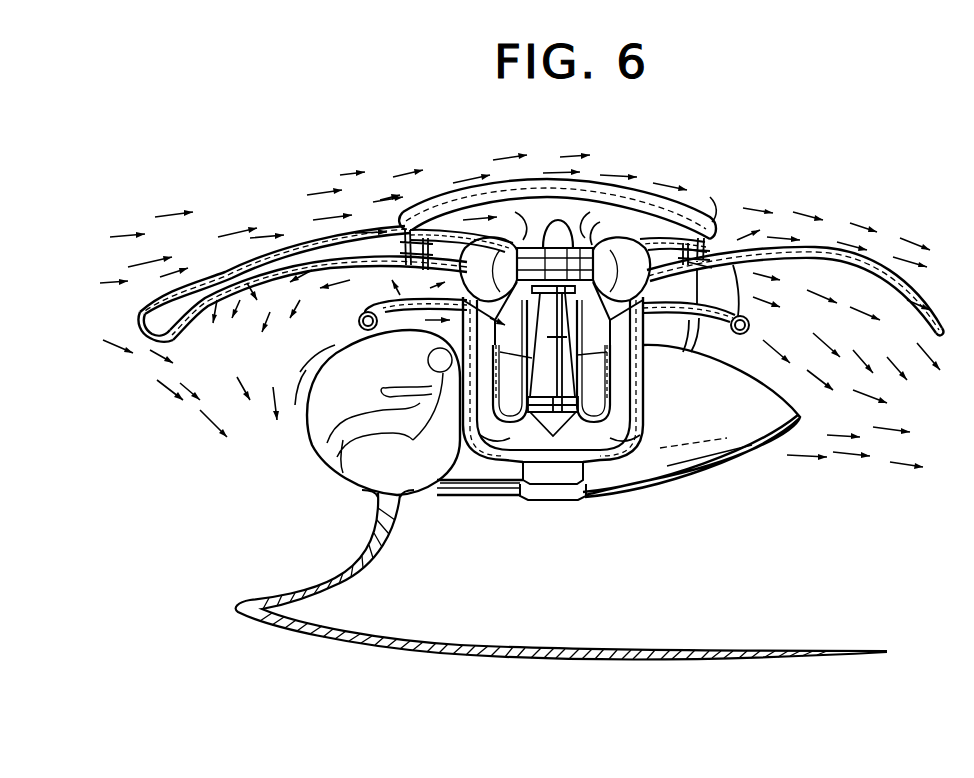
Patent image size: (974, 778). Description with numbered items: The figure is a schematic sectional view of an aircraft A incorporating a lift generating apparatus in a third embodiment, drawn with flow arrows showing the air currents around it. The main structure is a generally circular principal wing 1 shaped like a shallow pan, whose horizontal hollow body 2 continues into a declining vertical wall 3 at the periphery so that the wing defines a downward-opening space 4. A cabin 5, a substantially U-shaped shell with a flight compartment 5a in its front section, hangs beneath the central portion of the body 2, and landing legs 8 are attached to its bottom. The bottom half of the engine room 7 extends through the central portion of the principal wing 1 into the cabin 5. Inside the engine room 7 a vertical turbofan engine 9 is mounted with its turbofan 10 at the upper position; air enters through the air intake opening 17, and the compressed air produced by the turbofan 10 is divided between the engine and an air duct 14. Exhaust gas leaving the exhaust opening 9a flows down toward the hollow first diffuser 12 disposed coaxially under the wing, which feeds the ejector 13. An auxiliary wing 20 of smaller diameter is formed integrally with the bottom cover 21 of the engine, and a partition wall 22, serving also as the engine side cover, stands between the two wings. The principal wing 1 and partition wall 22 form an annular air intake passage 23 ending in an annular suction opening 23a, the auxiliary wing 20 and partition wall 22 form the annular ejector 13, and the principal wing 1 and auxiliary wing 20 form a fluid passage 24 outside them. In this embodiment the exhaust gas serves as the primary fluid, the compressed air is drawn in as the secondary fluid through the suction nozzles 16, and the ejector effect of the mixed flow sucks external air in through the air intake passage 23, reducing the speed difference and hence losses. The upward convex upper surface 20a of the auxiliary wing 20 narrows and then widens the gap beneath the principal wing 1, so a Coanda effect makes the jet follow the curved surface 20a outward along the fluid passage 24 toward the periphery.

The aircraft A is at (597, 186).
The principal wing 1 is at (822, 250).
The hollow body 2 is at (300, 235).
The vertical wall 3 is at (140, 311).
The space 4 is at (293, 294).
The cabin 5 is at (712, 478).
The flight compartment 5a is at (320, 425).
The engine room 7 is at (546, 214).
The landing legs 8 is at (388, 650).
The turbofan engine 9 is at (492, 291).
The exhaust opening 9a is at (588, 470).
The turbofan 10 is at (608, 225).
The first diffuser 12 is at (562, 442).
The ejector 13 is at (689, 327).
The air duct 14 is at (551, 361).
The suction nozzles 16 is at (648, 280).
The air intake opening 17 is at (393, 243).
The auxiliary wing 20 is at (749, 322).
The upper surface 20a is at (706, 417).
The bottom cover 21 is at (643, 405).
The partition wall 22 is at (633, 352).
The air intake passage 23 is at (645, 250).
The suction opening 23a is at (670, 258).
The fluid passage 24 is at (727, 293).